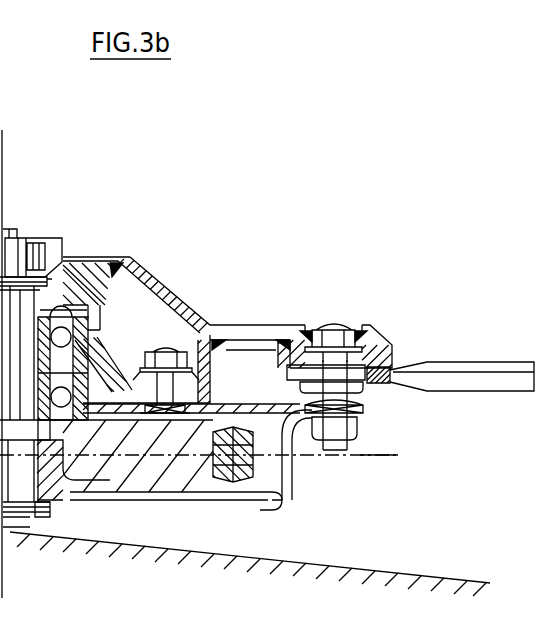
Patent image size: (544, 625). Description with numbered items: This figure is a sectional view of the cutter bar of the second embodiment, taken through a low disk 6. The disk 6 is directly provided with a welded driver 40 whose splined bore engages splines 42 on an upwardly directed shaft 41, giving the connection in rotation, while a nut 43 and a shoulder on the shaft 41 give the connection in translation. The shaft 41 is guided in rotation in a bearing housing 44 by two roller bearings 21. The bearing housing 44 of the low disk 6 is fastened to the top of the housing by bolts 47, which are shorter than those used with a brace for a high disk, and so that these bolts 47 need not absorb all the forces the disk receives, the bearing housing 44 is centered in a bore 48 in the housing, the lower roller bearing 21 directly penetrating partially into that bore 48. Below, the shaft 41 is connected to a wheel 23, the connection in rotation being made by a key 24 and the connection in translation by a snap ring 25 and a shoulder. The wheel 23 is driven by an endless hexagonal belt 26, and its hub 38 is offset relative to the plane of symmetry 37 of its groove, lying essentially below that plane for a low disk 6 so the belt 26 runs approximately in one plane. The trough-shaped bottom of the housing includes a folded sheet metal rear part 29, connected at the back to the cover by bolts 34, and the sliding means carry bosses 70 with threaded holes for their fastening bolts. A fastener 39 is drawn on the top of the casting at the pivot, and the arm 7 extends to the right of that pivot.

The low disk 6 is at (186, 313).
The arm 7 is at (517, 368).
The roller bearings 21 is at (97, 373).
The wheel 23 is at (221, 480).
The key 24 is at (13, 465).
The snap ring 25 is at (42, 505).
The hexagonal belt 26 is at (245, 468).
The rear part 29 is at (166, 497).
The bolts 34 is at (355, 435).
The plane of symmetry 37 is at (378, 455).
The hub 38 is at (55, 480).
The bolt nut on casting 39 is at (218, 357).
The driver 40 is at (107, 277).
The shaft 41 is at (10, 236).
The splines 42 is at (60, 275).
The nut 43 is at (30, 247).
The bearing housing 44 is at (89, 352).
The bolts 47 is at (166, 393).
The bore 48 is at (97, 419).
The bosses 70 is at (45, 540).